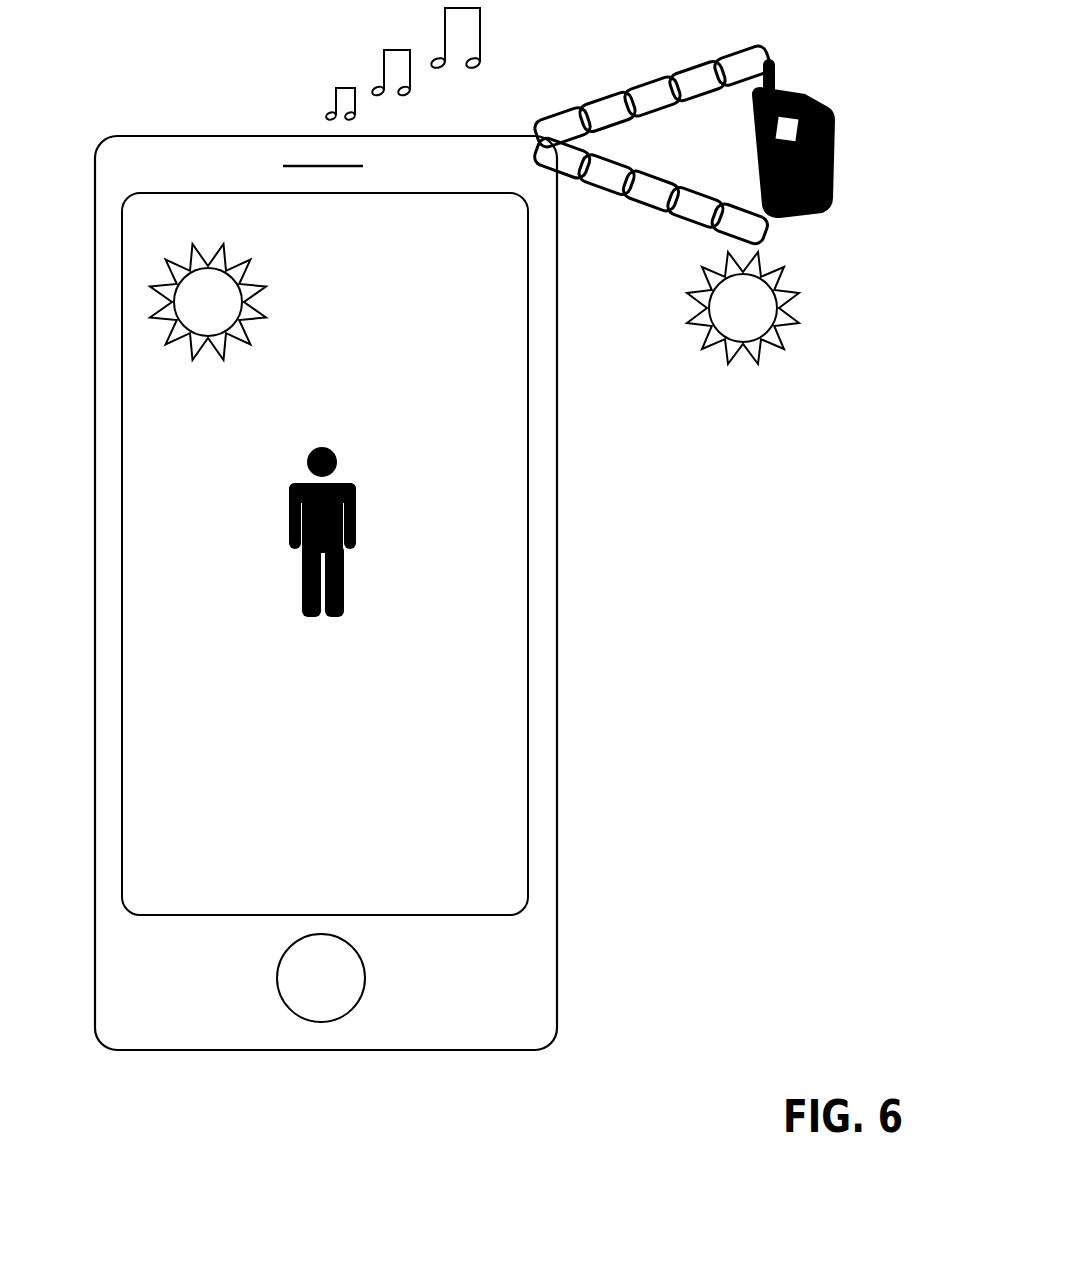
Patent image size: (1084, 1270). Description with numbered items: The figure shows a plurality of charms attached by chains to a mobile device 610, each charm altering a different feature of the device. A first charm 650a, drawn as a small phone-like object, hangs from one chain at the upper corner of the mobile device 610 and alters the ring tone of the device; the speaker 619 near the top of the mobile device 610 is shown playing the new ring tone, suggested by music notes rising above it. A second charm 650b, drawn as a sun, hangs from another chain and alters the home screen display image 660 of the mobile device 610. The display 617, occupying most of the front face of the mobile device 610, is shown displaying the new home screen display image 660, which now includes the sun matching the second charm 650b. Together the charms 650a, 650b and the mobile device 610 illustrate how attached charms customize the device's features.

The mobile device 610 is at (326, 626).
The display 617 is at (529, 556).
The speaker 619 is at (256, 160).
The home screen display image 660 is at (299, 430).
The charm 650a is at (691, 112).
The charm 650b is at (665, 250).